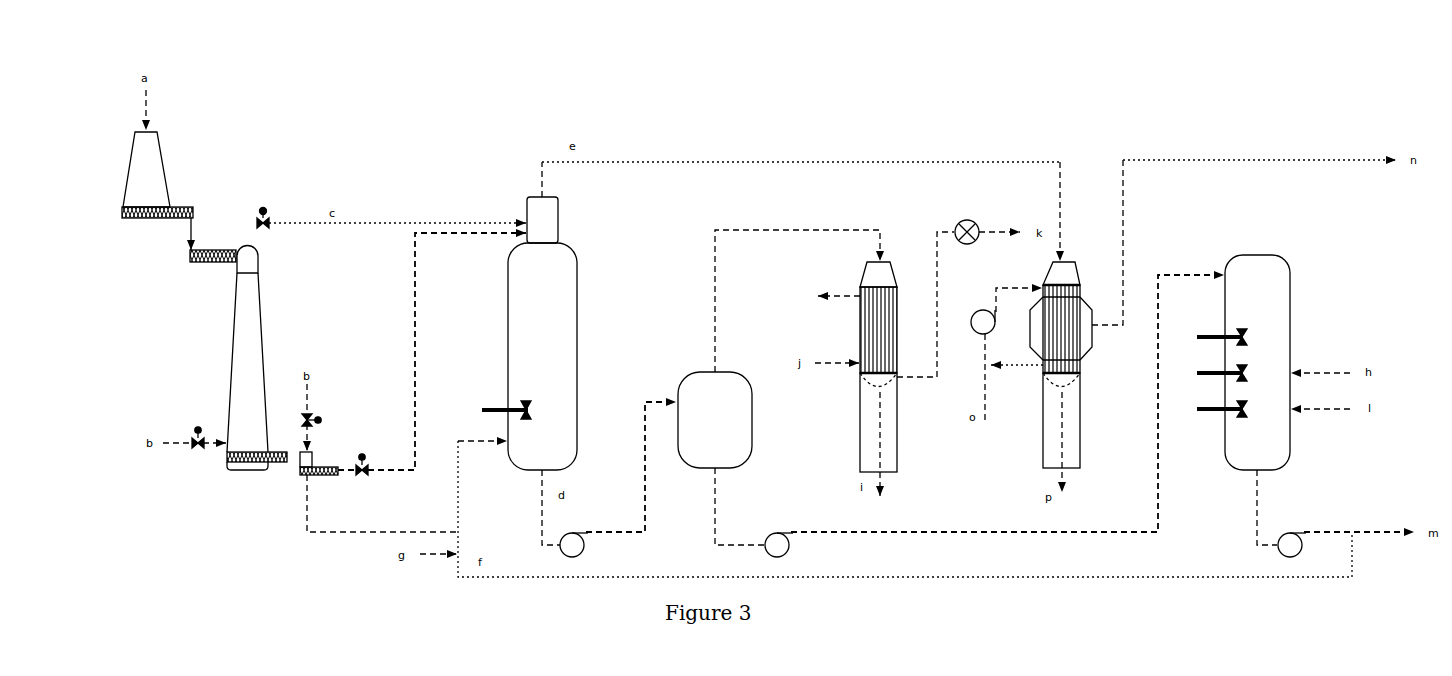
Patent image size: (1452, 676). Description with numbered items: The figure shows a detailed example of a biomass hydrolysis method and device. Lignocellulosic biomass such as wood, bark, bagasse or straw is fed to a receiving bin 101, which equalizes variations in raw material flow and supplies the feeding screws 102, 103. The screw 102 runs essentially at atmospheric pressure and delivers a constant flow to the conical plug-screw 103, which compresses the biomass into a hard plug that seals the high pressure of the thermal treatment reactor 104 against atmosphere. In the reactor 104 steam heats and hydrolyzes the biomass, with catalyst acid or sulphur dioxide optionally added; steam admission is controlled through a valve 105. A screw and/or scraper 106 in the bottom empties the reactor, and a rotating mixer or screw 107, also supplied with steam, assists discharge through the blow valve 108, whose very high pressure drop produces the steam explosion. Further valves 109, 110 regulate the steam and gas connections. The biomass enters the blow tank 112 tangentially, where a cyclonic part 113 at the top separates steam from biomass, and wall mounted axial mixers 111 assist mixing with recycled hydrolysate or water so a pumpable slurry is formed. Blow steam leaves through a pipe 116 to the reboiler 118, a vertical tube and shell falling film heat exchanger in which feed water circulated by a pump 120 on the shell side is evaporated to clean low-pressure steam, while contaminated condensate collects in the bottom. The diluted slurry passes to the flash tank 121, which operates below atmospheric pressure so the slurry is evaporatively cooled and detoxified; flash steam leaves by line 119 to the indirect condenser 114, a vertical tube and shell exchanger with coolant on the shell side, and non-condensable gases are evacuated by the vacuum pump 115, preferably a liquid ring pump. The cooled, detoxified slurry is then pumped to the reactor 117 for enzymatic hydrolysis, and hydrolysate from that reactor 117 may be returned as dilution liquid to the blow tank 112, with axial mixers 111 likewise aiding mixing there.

The receiving bin 101 is at (126, 150).
The feeding screw 102 is at (153, 220).
The plug-screw 103 is at (218, 264).
The thermal treatment reactor 104 is at (233, 313).
The valve 105 is at (197, 430).
The screw and/or scraper 106 is at (226, 456).
The rotating mixer or screw 107 is at (325, 477).
The blow valve 108 is at (362, 456).
The valve 109 is at (321, 418).
The valve 110 is at (267, 210).
The wall mounted axial mixer 111 is at (483, 409).
The blow tank 112 is at (507, 380).
The cyclonic part 113 is at (526, 217).
The indirect condenser 114 is at (858, 381).
The vacuum pump 115 is at (975, 242).
The pipe 116 is at (682, 163).
The enzymatic hydrolysis reactor 117 is at (1226, 460).
The reboiler 118 is at (1041, 444).
The flash tank 119 is at (768, 230).
The pump 120 is at (980, 311).
The flash tank 121 is at (738, 469).